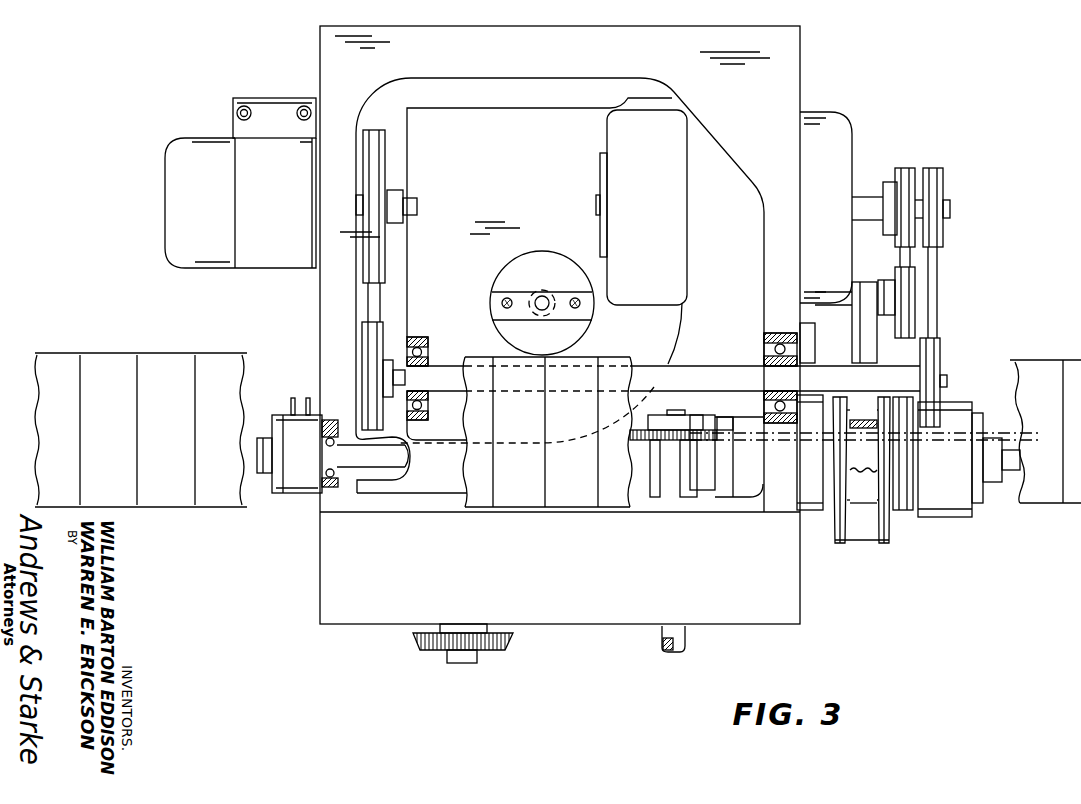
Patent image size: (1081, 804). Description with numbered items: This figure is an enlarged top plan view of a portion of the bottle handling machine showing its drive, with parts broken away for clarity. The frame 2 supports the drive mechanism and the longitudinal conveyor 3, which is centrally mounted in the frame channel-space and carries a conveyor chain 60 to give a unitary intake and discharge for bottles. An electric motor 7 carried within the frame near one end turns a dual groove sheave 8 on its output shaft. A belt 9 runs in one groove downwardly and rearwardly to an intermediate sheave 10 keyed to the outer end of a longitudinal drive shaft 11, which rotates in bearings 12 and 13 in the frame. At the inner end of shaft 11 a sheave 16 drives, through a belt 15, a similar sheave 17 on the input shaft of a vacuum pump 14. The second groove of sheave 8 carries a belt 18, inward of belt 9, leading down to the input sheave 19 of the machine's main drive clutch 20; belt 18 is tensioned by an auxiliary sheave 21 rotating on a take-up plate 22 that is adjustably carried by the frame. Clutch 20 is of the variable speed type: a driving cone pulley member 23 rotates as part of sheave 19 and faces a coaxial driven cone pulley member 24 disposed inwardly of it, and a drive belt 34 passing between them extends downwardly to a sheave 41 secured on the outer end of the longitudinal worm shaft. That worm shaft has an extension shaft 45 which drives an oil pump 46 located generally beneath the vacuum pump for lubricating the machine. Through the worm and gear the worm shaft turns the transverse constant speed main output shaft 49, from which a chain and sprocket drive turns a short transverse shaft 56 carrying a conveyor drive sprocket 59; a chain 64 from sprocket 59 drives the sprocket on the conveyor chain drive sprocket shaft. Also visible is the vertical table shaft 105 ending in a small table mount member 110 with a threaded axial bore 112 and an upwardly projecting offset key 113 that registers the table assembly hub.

The frame 2 is at (796, 74).
The longitudinal conveyor 3 is at (120, 348).
The electric motor 7 is at (841, 137).
The dual groove sheave 8 is at (935, 168).
The belt 9 is at (936, 267).
The intermediate sheave 10 is at (940, 352).
The longitudinal drive shaft 11 is at (714, 370).
The bearing 12 is at (785, 345).
The bearing 13 is at (430, 351).
The vacuum pump 14 is at (172, 180).
The belt 15 is at (376, 303).
The sheave 16 is at (365, 406).
The sheave 17 is at (387, 163).
The belt 18 is at (905, 256).
The input sheave 19 is at (910, 520).
The main drive clutch 20 is at (828, 521).
The auxiliary sheave 21 is at (914, 333).
The take-up plate 22 is at (866, 286).
The driving cone pulley member 23 is at (892, 535).
The driven cone pulley member 24 is at (838, 545).
The drive belt 34 is at (862, 542).
The sheave 41 is at (885, 542).
The extension shaft 45 is at (411, 471).
The oil pump 46 is at (290, 416).
The main output shaft 49 is at (661, 639).
The transverse shaft 56 is at (634, 472).
The conveyor drive sprocket 59 is at (631, 453).
The conveyor chain 60 is at (1073, 361).
The chain 64 is at (781, 440).
The shaft 105 is at (553, 311).
The table mount member 110 is at (572, 324).
The threaded axial bore 112 is at (545, 300).
The offset key 113 is at (495, 311).